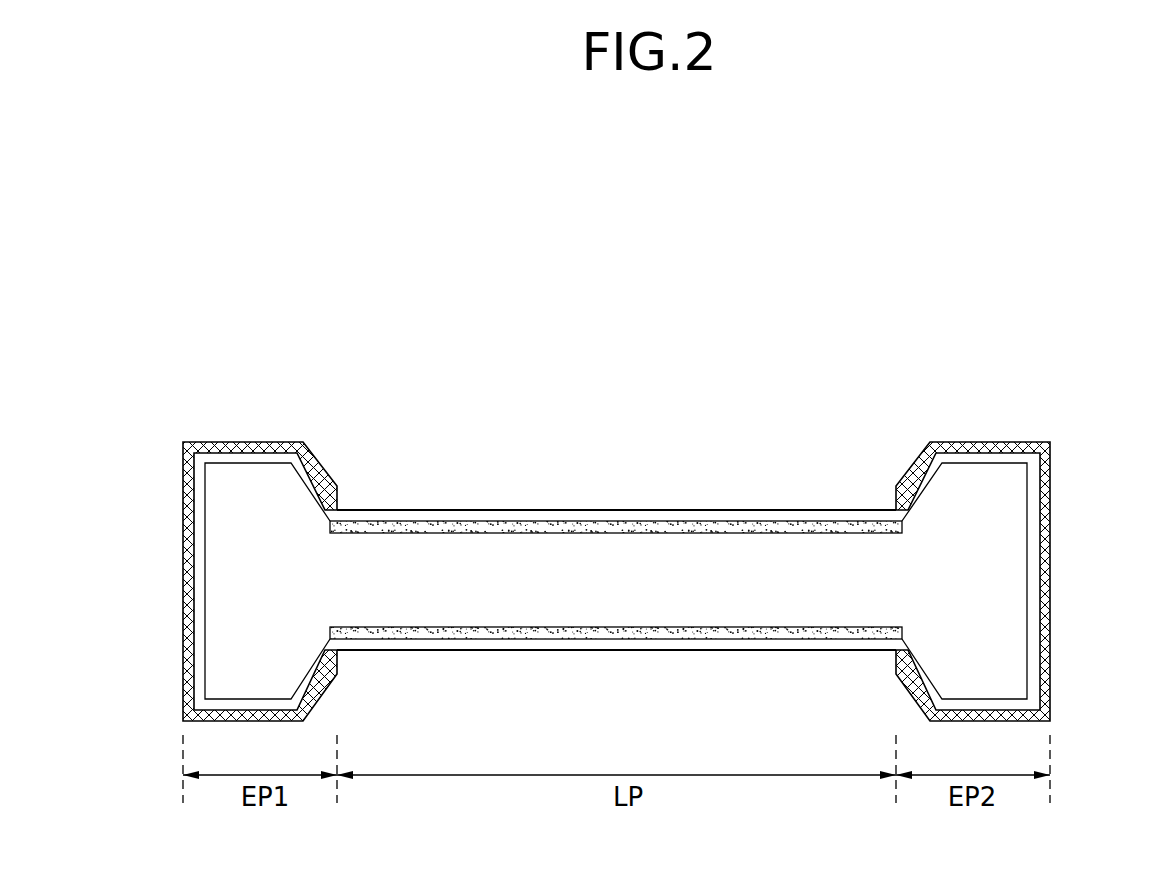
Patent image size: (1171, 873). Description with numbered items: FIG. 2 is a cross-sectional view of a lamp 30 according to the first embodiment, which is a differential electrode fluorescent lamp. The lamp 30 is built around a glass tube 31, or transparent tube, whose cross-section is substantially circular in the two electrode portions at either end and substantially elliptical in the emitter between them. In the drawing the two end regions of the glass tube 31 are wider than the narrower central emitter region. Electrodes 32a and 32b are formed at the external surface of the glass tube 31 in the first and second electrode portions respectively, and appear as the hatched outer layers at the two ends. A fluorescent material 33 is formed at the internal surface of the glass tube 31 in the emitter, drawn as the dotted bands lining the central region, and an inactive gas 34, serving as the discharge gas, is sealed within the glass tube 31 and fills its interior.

The lamp 30 is at (173, 410).
The glass tube 31 is at (200, 517).
The electrode 32a is at (185, 590).
The electrode 32b is at (1050, 572).
The fluorescent material 33 is at (551, 530).
The inactive gas 34 is at (658, 580).